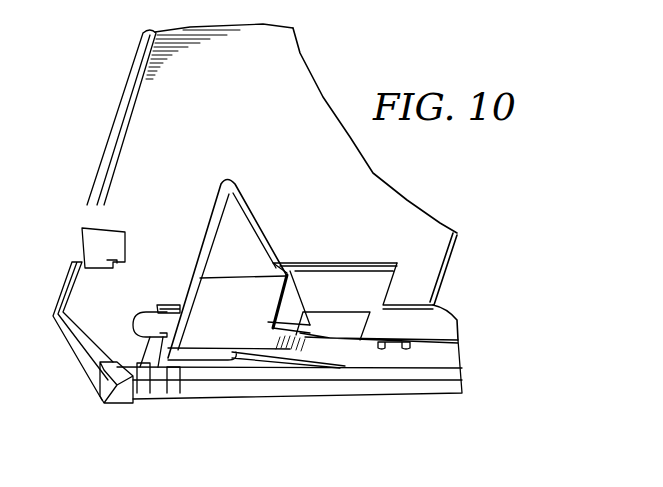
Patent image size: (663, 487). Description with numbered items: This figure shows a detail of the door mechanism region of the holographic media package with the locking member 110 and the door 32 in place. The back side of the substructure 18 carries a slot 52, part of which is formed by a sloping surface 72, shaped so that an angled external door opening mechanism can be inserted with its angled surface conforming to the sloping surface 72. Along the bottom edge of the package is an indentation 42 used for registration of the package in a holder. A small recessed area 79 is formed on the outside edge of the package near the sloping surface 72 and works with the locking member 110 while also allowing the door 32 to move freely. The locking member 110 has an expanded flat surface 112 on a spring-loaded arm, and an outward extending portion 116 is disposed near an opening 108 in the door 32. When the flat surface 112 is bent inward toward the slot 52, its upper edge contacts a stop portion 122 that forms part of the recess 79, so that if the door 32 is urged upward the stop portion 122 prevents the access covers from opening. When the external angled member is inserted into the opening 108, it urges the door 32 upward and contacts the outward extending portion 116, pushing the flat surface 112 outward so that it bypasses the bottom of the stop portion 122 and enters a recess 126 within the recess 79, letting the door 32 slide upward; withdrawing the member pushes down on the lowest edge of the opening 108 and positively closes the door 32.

The substructure 18 is at (143, 117).
The indentation 42 is at (92, 243).
The slot 52 is at (228, 220).
The sloping surface 72 is at (247, 223).
The flat surface 112 is at (233, 286).
The stop portion 122 is at (330, 279).
The recess 126 is at (364, 267).
The locking member 110 is at (188, 295).
The outward extending portion 116 is at (198, 350).
The opening 108 is at (192, 387).
The door 32 is at (393, 377).
The recessed area 79 is at (450, 327).